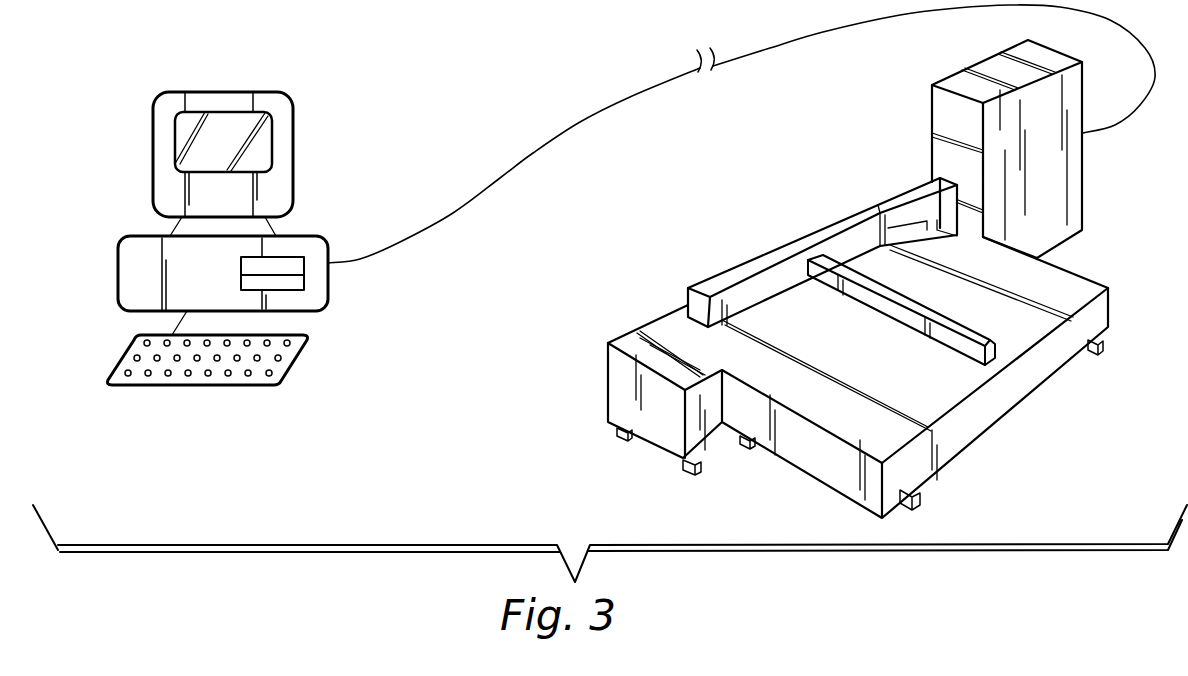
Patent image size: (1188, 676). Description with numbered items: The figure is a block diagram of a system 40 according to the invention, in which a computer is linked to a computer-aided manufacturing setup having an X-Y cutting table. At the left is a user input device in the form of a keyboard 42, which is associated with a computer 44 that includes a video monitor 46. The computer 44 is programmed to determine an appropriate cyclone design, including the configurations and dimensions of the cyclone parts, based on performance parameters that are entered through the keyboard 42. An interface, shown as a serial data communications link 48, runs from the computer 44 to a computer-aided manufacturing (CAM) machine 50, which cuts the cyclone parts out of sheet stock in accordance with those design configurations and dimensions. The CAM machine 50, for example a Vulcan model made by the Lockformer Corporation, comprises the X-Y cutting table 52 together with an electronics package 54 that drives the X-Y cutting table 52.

The system 40 is at (627, 82).
The keyboard 42 is at (293, 366).
The computer 44 is at (118, 280).
The video monitor 46 is at (293, 150).
The RS-232 data communications link 48 is at (533, 153).
The computer-aided manufacturing (CAM) machine 50 is at (780, 240).
The X-Y cutting table 52 is at (1010, 413).
The electronics package 54 is at (932, 128).